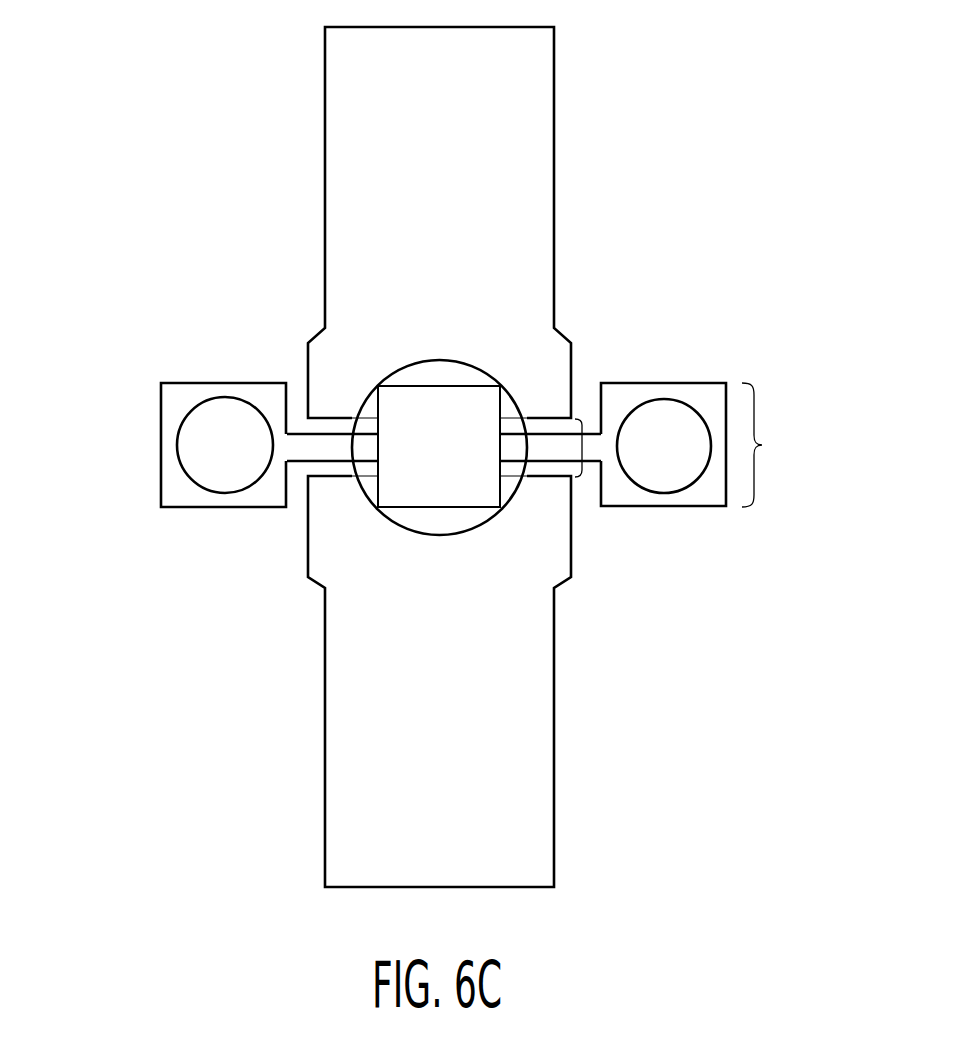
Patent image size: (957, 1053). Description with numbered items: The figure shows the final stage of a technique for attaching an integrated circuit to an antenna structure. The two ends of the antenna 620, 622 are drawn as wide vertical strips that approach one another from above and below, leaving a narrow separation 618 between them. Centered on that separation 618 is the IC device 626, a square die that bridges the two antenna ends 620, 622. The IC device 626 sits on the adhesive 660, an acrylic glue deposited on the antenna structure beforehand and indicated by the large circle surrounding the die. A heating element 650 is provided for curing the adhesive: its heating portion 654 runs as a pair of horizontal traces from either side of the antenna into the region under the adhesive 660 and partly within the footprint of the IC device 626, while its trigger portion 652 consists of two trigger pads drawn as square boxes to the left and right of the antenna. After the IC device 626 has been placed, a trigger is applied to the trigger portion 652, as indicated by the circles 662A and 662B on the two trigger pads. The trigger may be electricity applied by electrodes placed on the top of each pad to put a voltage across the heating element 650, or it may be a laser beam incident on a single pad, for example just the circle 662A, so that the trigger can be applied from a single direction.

The end of the antenna 620 is at (554, 212).
The end of the antenna 622 is at (554, 783).
The IC device 626 is at (500, 488).
The adhesive 660 is at (482, 522).
The heating portion 654 is at (307, 447).
The trigger portion 652 is at (197, 390).
The circle 662A is at (192, 437).
The circle 662B is at (692, 403).
The separation 618 is at (582, 446).
The heating element 650 is at (774, 445).